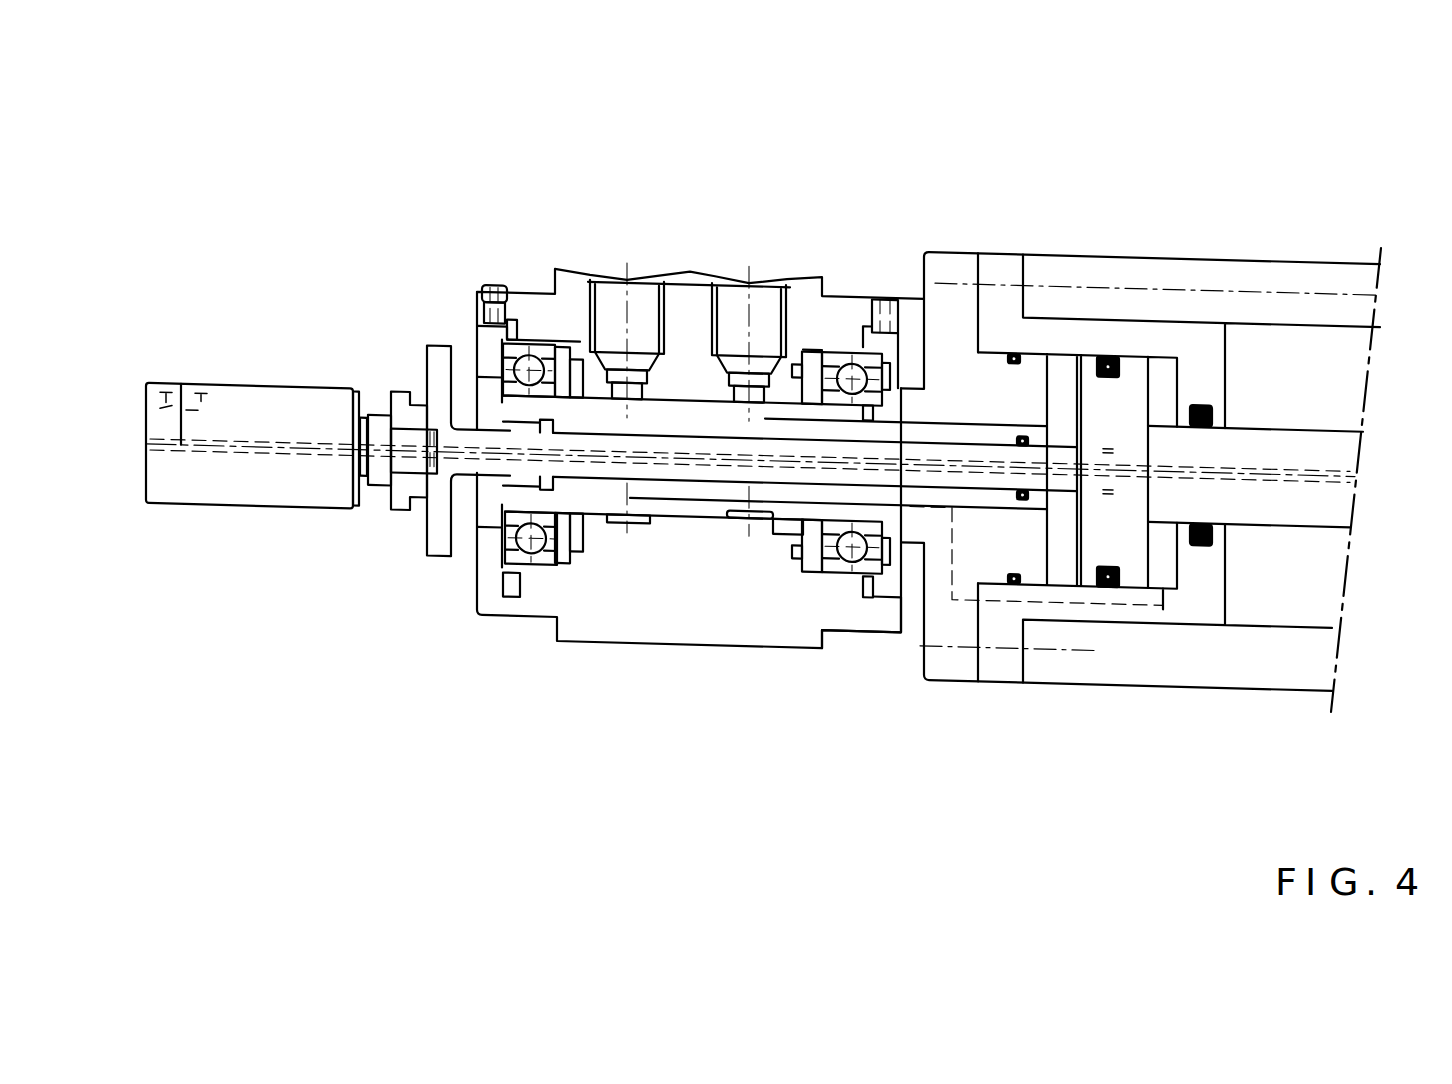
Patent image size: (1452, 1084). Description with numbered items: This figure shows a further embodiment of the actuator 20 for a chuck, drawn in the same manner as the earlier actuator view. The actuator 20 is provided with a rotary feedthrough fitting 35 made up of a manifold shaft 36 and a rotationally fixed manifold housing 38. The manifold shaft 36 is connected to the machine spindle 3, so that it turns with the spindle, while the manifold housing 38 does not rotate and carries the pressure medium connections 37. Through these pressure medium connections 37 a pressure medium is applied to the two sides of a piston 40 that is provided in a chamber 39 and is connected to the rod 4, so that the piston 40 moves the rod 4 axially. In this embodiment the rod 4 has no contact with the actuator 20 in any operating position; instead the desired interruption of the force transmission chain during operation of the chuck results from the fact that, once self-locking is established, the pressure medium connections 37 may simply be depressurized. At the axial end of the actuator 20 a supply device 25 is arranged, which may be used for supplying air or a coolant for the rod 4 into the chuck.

The supply device 25 is at (213, 487).
The actuator 20 is at (522, 665).
The rotary feedthrough fitting 35 is at (692, 688).
The manifold shaft 36 is at (557, 500).
The pressure medium connections 37 is at (748, 322).
The manifold housing 38 is at (800, 627).
The machine spindle 3 is at (1227, 285).
The piston 40 is at (1117, 403).
The chamber 39 is at (1207, 377).
The rod 4 is at (1325, 503).